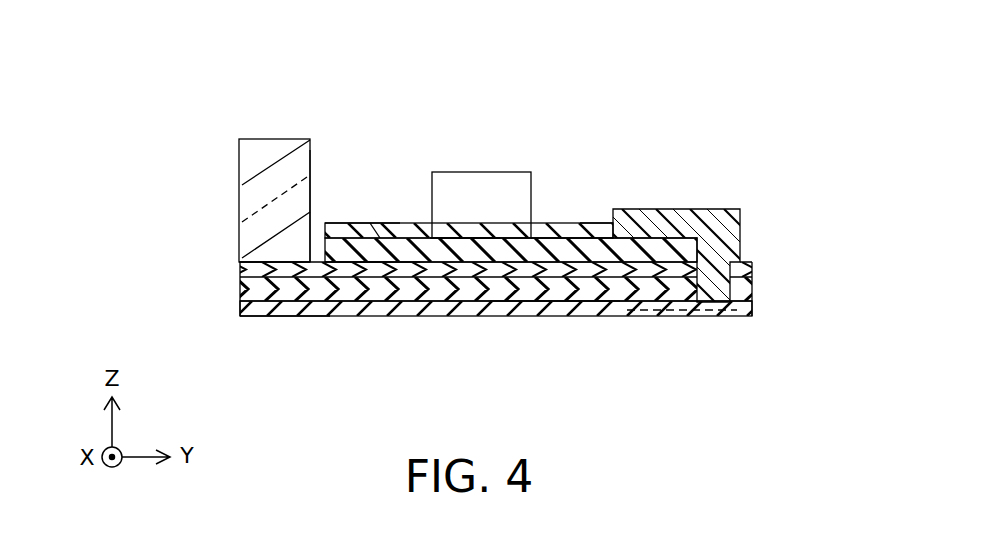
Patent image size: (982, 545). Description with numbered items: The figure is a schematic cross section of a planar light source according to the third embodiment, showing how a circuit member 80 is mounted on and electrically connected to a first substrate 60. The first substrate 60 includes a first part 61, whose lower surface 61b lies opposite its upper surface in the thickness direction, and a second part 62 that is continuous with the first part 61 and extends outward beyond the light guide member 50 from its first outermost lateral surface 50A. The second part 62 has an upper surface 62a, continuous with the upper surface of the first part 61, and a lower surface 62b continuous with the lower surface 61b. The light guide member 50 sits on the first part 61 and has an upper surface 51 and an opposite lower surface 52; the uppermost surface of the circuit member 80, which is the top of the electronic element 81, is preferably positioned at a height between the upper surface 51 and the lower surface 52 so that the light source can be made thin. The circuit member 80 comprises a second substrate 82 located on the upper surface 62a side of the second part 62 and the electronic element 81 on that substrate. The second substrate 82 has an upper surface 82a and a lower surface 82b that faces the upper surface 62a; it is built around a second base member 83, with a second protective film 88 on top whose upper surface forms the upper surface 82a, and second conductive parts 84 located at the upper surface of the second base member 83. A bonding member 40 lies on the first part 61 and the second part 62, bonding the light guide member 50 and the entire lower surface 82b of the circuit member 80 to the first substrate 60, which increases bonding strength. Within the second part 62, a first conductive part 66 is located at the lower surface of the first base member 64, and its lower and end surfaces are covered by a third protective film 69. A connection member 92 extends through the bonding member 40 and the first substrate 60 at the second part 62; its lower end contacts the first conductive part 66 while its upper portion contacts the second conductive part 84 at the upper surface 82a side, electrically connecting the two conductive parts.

The bonding member 40 is at (253, 270).
The light guide member 50 is at (262, 215).
The first outermost lateral surface 50A is at (311, 187).
The upper surface of the light guide member 51 is at (266, 139).
The lower surface of the light guide member 52 is at (265, 263).
The first substrate 60 is at (605, 303).
The first part 61 is at (253, 290).
The lower surface of the first part 61b is at (250, 316).
The second part 62 is at (470, 288).
The upper surface of the second part 62a is at (467, 268).
The lower surface of the second part 62b is at (335, 302).
The first base member 64 is at (585, 288).
The first conductive part 66 is at (704, 314).
The third protective film 69 is at (520, 305).
The circuit member 80 is at (478, 220).
The electronic element 81 is at (478, 195).
The second substrate 82 is at (493, 228).
The upper surface of the second substrate 82a is at (362, 223).
The lower surface of the second substrate 82b is at (384, 263).
The second base member 83 is at (553, 250).
The second conductive part 84 is at (602, 238).
The second protective film 88 is at (378, 224).
The connection member 92 is at (712, 230).